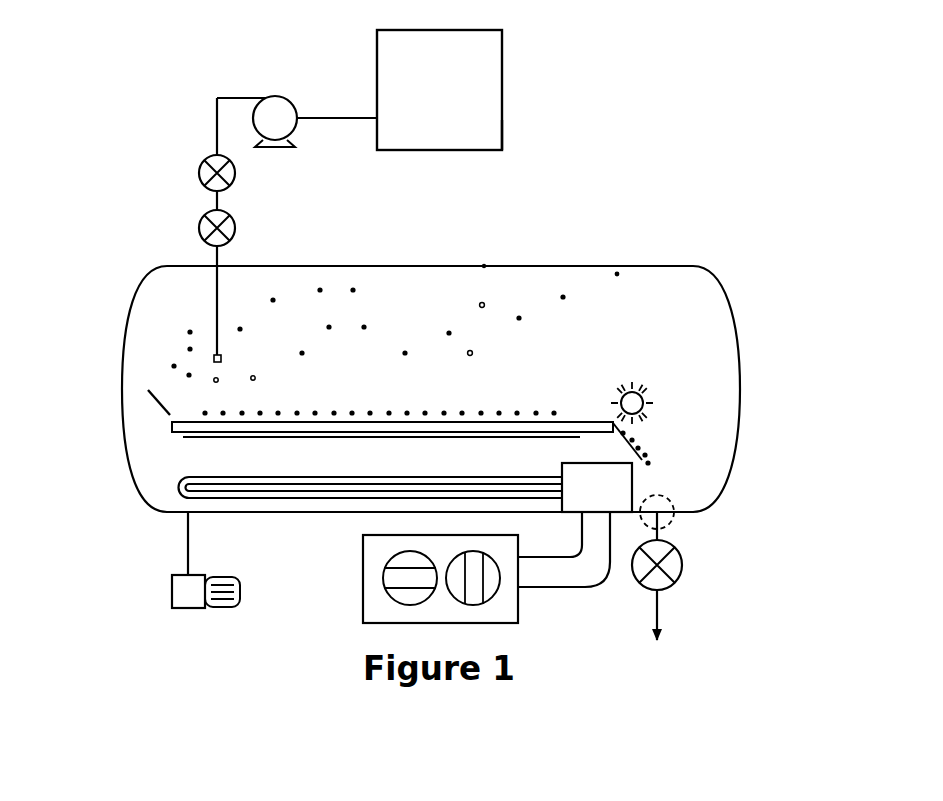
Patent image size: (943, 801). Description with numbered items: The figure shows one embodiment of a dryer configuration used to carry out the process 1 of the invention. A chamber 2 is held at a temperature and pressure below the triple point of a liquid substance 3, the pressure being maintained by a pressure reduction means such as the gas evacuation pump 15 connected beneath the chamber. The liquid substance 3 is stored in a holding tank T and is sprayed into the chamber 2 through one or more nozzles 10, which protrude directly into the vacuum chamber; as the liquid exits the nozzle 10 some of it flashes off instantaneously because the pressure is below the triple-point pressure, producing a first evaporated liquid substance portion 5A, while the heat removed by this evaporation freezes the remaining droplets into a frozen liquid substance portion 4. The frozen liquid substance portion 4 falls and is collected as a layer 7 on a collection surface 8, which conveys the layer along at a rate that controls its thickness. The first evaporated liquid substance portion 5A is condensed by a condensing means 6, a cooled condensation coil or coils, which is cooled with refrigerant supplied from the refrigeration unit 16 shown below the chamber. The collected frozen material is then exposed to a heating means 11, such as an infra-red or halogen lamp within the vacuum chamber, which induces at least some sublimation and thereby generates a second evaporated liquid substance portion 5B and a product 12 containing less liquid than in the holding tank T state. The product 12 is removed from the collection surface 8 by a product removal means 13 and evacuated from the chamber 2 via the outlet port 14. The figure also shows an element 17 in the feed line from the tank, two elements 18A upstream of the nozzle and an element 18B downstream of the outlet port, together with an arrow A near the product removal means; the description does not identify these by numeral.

The process 1 is at (228, 658).
The chamber 2 is at (580, 267).
The liquid substance 3 is at (482, 74).
The holding tank T is at (508, 135).
The frozen liquid substance portion 4 is at (107, 366).
The layer 7 is at (184, 416).
The first evaporated liquid substance portion 5A is at (182, 347).
The second evaporated liquid substance portion 5B is at (557, 293).
The condensing means 6 is at (166, 488).
The collection surface 8 is at (570, 422).
The nozzle 10 is at (224, 356).
The heating means 11 is at (172, 434).
The product 12 is at (661, 463).
The product removal means 13 is at (655, 401).
The outlet port 14 is at (671, 520).
The gas evacuation pump 15 is at (172, 588).
The refrigeration unit 16 is at (518, 600).
The pump 17 is at (272, 95).
The inlet valves 18A is at (243, 228).
The outlet valve 18B is at (660, 605).
The direction of movement A is at (666, 406).